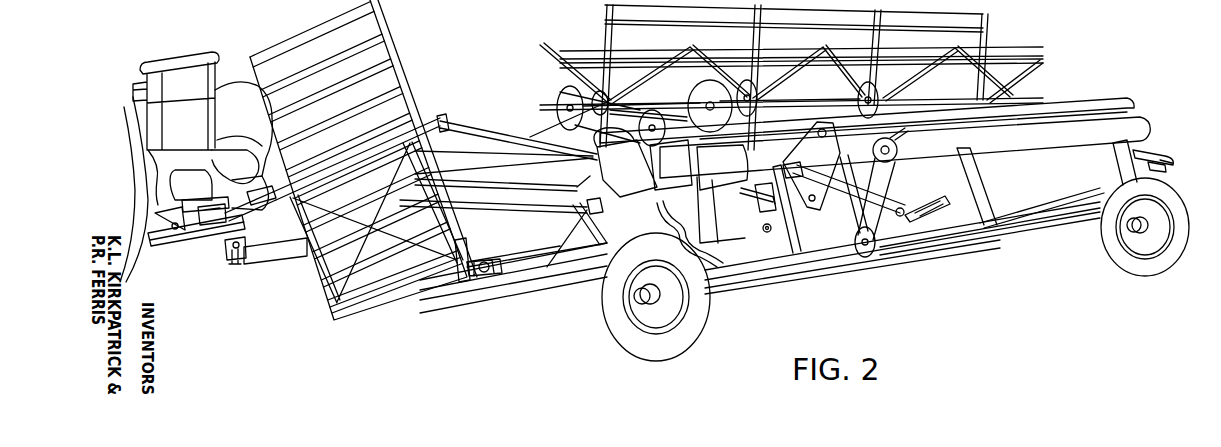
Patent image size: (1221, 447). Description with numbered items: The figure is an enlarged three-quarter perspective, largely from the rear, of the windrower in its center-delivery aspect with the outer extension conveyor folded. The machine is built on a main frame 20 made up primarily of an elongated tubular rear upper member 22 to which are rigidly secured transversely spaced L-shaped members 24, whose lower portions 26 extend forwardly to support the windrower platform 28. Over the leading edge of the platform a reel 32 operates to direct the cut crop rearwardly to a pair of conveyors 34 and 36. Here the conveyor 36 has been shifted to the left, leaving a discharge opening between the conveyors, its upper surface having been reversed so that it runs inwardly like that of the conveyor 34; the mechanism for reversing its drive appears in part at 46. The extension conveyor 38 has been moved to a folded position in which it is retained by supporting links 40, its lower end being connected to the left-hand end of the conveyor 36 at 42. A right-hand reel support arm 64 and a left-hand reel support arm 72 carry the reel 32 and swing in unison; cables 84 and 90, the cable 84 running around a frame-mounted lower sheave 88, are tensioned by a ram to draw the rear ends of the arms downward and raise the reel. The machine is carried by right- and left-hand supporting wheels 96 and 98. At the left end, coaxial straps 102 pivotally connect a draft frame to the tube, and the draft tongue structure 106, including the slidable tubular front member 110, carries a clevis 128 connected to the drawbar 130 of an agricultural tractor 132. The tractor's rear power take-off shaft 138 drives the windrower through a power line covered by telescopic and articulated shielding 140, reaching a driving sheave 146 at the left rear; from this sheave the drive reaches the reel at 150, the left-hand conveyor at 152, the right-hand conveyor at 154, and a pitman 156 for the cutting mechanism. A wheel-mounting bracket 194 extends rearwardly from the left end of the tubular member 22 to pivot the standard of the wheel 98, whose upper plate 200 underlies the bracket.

The main frame 20 is at (1143, 116).
The elongated tubular rear upper member 22 is at (1047, 149).
The L-shaped members 24 is at (968, 170).
The lower portions 26 is at (735, 270).
The windrower platform 28 is at (1072, 206).
The reel 32 is at (983, 21).
The conveyor 34 is at (1037, 228).
The conveyor 36 is at (818, 256).
The extension conveyor 38 is at (382, 25).
The supporting links 40 is at (450, 130).
The connection of extension conveyor to conveyor 42 is at (465, 256).
The drive reversing mechanism 46 is at (815, 122).
The right-hand reel support arm 64 is at (1150, 160).
The left-hand reel support arm 72 is at (754, 193).
The cable 84 is at (760, 215).
The lower sheave 88 is at (766, 235).
The cable 90 is at (1158, 173).
The right-hand supporting wheel 96 is at (1123, 257).
The left-hand supporting wheel 98 is at (617, 331).
The coaxial straps 102 is at (746, 160).
The draft tongue structure 106 is at (299, 278).
The front draft tongue member 110 is at (277, 270).
The clevis 128 is at (216, 258).
The drawbar 130 is at (183, 240).
The agricultural tractor 132 is at (146, 108).
The rear power take-off shaft 138 is at (198, 213).
The telescopic and articulated shielding 140 is at (248, 185).
The driving sheave 146 is at (605, 160).
The reel drive 150 is at (563, 96).
The left-hand conveyor drive 152 is at (850, 251).
The right-hand conveyor drive 154 is at (930, 210).
The pitman 156 is at (1054, 178).
The wheel-mounting bracket 194 is at (622, 178).
The plate 200 is at (609, 208).